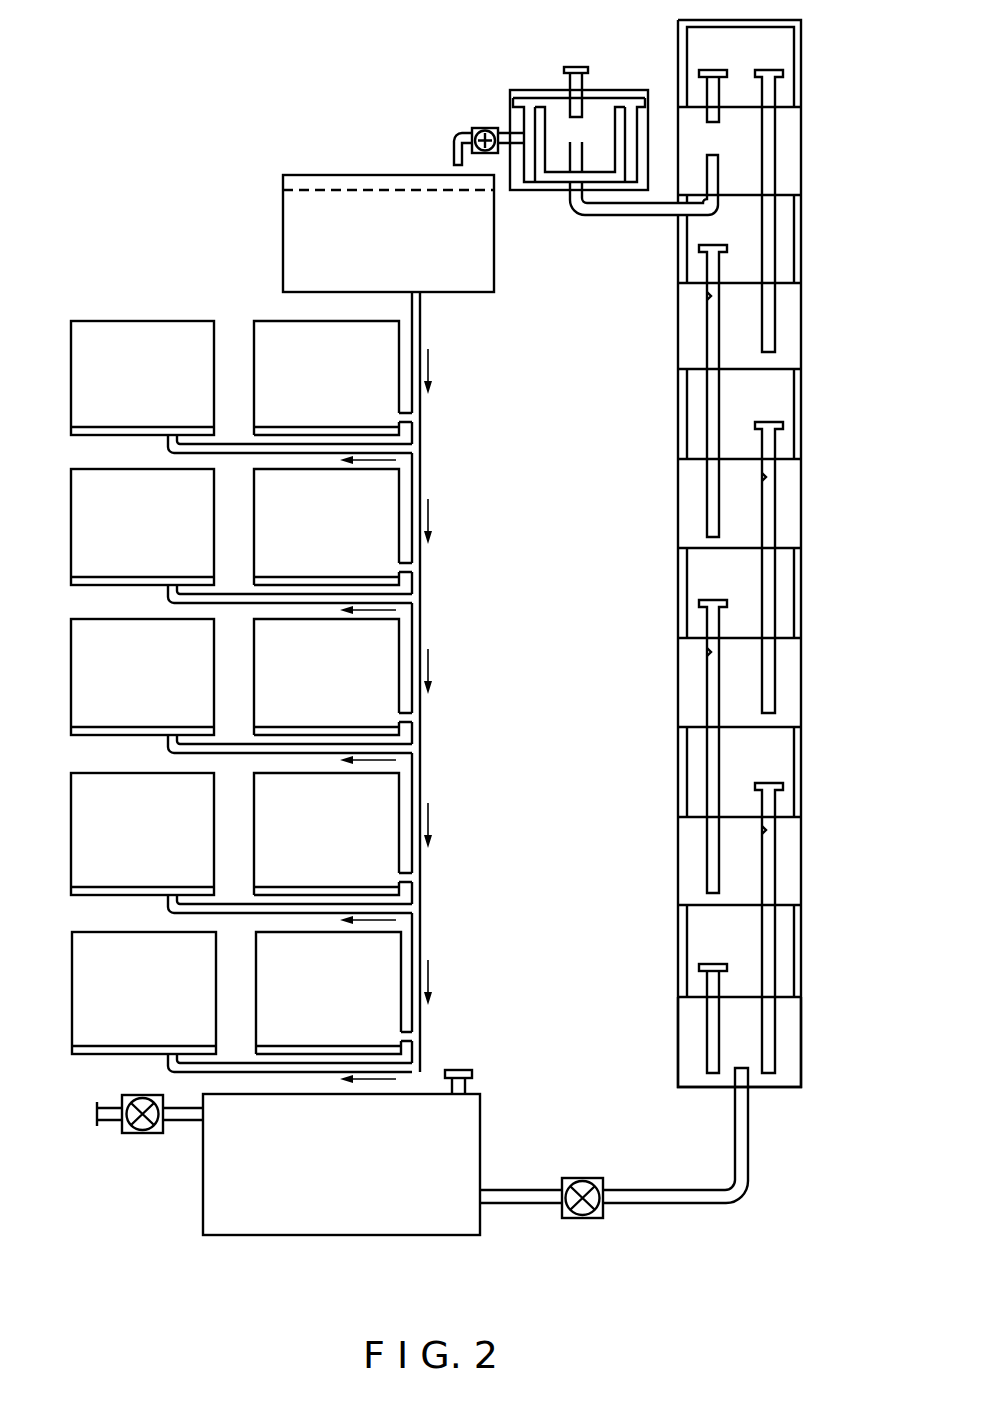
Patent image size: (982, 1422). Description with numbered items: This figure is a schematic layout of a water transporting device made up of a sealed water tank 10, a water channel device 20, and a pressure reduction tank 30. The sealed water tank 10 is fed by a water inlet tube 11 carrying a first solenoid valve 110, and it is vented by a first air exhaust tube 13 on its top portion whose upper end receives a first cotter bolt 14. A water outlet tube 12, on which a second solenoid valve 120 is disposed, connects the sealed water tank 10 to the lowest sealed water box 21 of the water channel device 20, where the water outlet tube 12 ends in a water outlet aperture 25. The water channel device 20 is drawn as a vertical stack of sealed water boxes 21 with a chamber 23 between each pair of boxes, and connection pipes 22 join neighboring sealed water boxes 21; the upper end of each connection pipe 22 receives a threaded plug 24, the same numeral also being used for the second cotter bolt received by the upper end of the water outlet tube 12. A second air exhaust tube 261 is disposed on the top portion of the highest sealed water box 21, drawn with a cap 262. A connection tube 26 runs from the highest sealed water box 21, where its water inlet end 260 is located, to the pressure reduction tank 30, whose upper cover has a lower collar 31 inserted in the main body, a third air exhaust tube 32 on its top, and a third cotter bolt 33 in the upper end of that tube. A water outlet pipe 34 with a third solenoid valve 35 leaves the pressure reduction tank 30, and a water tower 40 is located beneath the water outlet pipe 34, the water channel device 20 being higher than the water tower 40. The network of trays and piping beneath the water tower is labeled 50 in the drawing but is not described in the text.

The sealed water tank 10 is at (475, 1131).
The water inlet tube 11 is at (180, 1113).
The first solenoid valve 110 is at (134, 1134).
The water outlet tube 12 is at (529, 1192).
The second solenoid valve 120 is at (598, 1218).
The first air exhaust tube 13 is at (468, 1087).
The first cotter bolt 14 is at (463, 1071).
The water channel device 20 is at (803, 412).
The sealed water box 21 is at (796, 1038).
The connection pipe 22 is at (773, 950).
The chamber 23 is at (704, 925).
The threaded plug 24 is at (708, 966).
The water outlet aperture 25 is at (718, 1010).
The connection tube 26 is at (625, 213).
The water inlet end 260 is at (713, 158).
The second air exhaust tube 261 is at (713, 96).
The pipe cap 262 is at (707, 72).
The pressure reduction tank 30 is at (605, 85).
The lower collar 31 is at (542, 163).
The third air exhaust tube 32 is at (572, 86).
The third cotter bolt 33 is at (576, 66).
The water outlet pipe 34 is at (502, 136).
The third solenoid valve 35 is at (478, 128).
The water tower 40 is at (356, 171).
The piping network with trays 50 is at (439, 609).